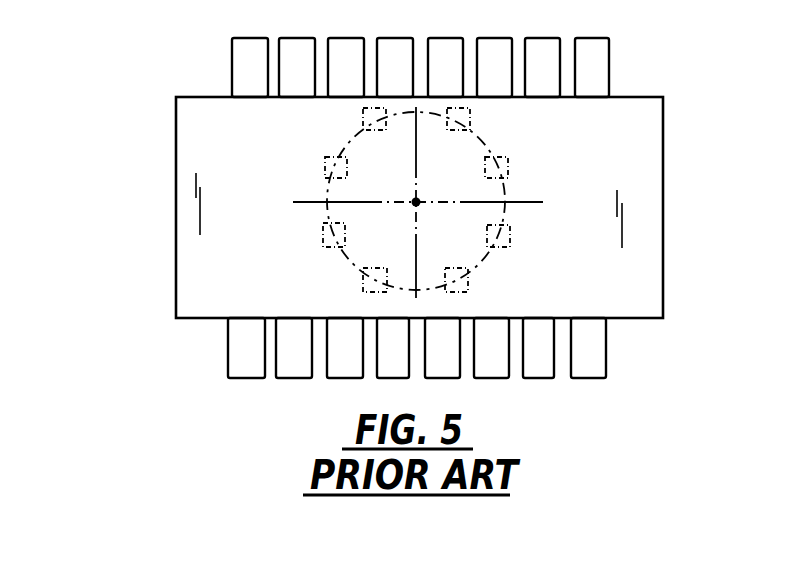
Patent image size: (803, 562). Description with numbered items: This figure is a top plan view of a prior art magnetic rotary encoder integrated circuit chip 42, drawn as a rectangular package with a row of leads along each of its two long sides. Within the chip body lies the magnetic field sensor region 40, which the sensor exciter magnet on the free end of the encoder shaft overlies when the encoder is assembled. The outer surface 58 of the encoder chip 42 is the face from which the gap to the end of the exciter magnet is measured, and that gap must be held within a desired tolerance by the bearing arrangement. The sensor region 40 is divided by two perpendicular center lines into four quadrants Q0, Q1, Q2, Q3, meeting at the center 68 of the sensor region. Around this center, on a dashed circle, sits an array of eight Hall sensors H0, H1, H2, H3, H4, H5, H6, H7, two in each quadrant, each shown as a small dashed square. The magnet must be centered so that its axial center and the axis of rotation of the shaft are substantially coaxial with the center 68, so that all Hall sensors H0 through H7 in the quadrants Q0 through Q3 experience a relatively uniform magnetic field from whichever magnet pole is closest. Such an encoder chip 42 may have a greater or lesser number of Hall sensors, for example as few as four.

The magnetic rotary encoder integrated circuit chip 42 is at (158, 101).
The magnetic field sensor region 40 is at (538, 184).
The outer surface of the encoder chip 58 is at (358, 254).
The center of the sensor region 68 is at (419, 203).
The Hall sensor H0 is at (472, 118).
The Hall sensor H1 is at (508, 158).
The Hall sensor H2 is at (511, 233).
The Hall sensor H3 is at (470, 280).
The Hall sensor H4 is at (362, 286).
The Hall sensor H5 is at (322, 240).
The Hall sensor H6 is at (324, 166).
The Hall sensor H7 is at (362, 120).
The quadrant Q0 is at (442, 161).
The quadrant Q1 is at (442, 239).
The quadrant Q2 is at (374, 239).
The quadrant Q3 is at (374, 164).